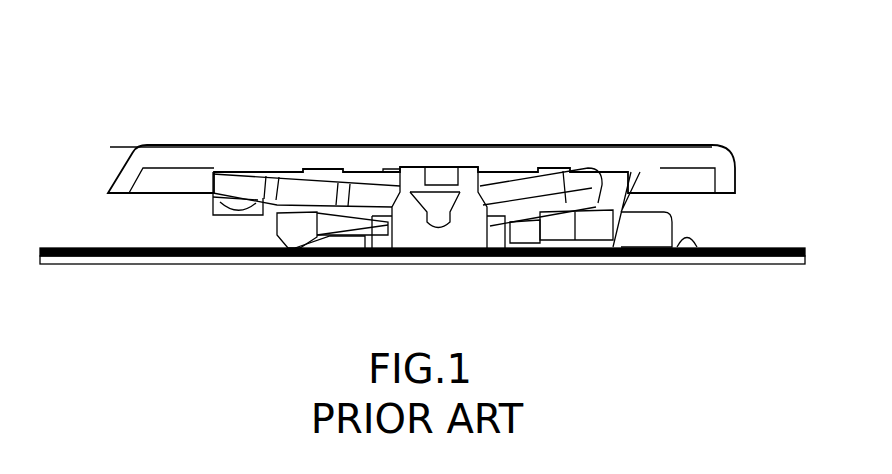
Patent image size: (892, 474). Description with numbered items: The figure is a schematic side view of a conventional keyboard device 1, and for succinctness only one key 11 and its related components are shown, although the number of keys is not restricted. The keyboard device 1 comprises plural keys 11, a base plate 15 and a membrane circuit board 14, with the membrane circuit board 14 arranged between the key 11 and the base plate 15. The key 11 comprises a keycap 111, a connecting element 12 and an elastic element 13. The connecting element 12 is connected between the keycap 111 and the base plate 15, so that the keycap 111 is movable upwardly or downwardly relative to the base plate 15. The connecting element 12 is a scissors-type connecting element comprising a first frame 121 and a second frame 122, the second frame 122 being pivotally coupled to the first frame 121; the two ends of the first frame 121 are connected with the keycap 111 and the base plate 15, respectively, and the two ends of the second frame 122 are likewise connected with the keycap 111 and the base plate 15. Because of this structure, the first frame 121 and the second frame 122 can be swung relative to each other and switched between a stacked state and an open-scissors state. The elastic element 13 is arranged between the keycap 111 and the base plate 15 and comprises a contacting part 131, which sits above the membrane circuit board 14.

The keyboard device 1 is at (692, 44).
The key 11 is at (597, 144).
The keycap 111 is at (383, 157).
The connecting element 12 is at (228, 183).
The first frame 121 is at (317, 192).
The second frame 122 is at (338, 221).
The elastic element 13 is at (464, 210).
The contacting part 131 is at (442, 217).
The membrane circuit board 14 is at (667, 252).
The base plate 15 is at (610, 262).